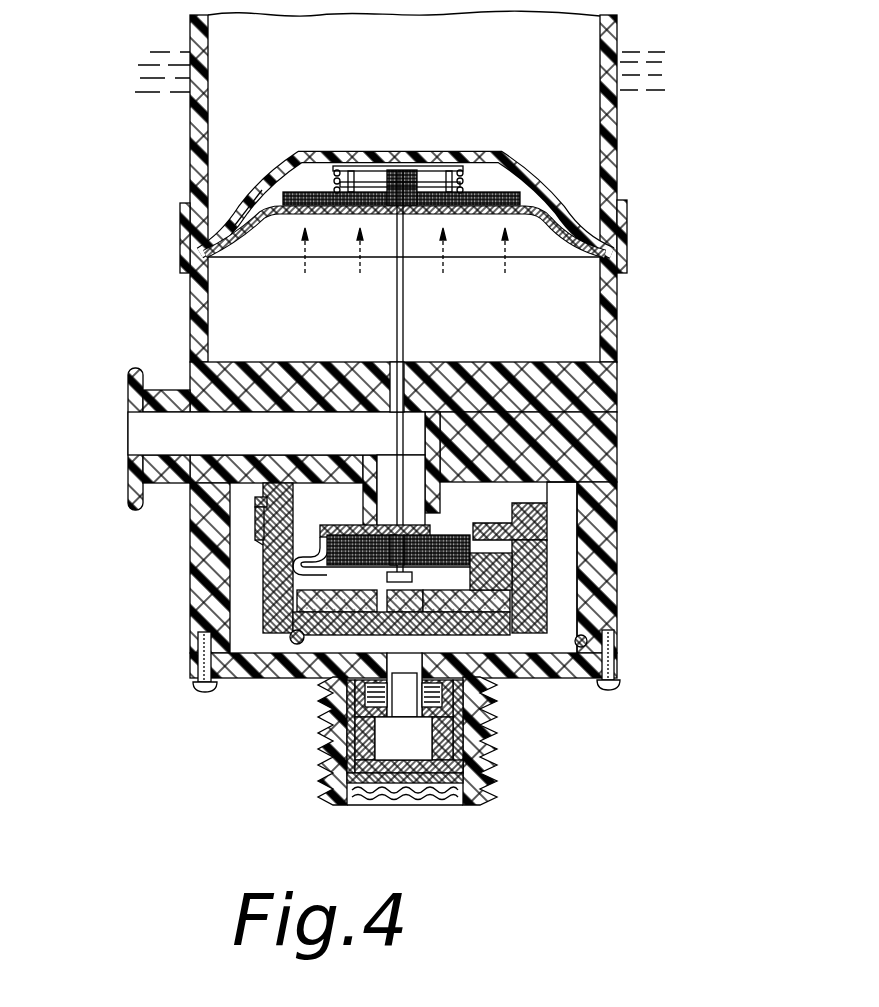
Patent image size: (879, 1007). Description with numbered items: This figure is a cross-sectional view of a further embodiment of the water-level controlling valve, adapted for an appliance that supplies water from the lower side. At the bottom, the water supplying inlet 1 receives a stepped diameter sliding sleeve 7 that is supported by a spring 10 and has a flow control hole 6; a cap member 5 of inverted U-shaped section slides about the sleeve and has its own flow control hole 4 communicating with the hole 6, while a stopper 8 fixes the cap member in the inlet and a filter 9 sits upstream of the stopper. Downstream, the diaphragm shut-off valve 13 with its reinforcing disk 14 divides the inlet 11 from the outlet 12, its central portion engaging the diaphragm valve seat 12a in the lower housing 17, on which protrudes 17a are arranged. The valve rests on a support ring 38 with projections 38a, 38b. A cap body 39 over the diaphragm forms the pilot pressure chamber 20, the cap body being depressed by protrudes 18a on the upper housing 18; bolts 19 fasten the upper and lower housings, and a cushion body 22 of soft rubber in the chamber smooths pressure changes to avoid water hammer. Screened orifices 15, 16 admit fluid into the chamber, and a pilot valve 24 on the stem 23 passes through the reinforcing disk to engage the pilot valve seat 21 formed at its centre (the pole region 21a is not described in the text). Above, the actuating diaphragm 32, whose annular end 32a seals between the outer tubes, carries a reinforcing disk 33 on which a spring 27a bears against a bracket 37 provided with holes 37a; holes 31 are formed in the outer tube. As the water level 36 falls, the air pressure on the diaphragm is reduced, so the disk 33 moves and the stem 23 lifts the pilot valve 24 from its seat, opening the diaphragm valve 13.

The water supplying inlet 1 is at (490, 800).
The flow control hole 4 is at (453, 741).
The cap member 5 is at (453, 752).
The flow control hole 6 is at (353, 735).
The sliding sleeve 7 is at (462, 702).
The stopper 8 is at (375, 784).
The filter 9 is at (428, 790).
The spring 10 is at (370, 690).
The inlet 11 is at (572, 606).
The outlet 12 is at (128, 420).
The diaphragm valve seat 12a is at (437, 512).
The diaphragm shut-off valve 13 is at (483, 545).
The reinforcing disk 14 is at (505, 573).
The screened orifice 15 is at (325, 530).
The screened orifice 16 is at (520, 562).
The lower housing 17 is at (605, 532).
The protrude 17a is at (550, 490).
The upper housing 18 is at (300, 652).
The protrude 18a is at (277, 647).
The bolt 19 is at (613, 684).
The pilot pressure chamber 20 is at (580, 572).
The pilot valve seat 21 is at (380, 562).
The magnet pole 21a is at (393, 556).
The cushion body 22 is at (297, 600).
The stem 23 is at (397, 437).
The pilot valve 24 is at (412, 577).
The spring 27a is at (333, 153).
The hole 31 is at (608, 340).
The actuating diaphragm 32 is at (548, 233).
The annular end 32a is at (617, 237).
The reinforcing disk 33 is at (520, 197).
The water level 36 is at (642, 52).
The bracket 37 is at (517, 162).
The hole 37a is at (258, 195).
The support ring 38 is at (258, 514).
The projection 38a is at (258, 522).
The projection 38b is at (258, 501).
The cap body 39 is at (586, 638).